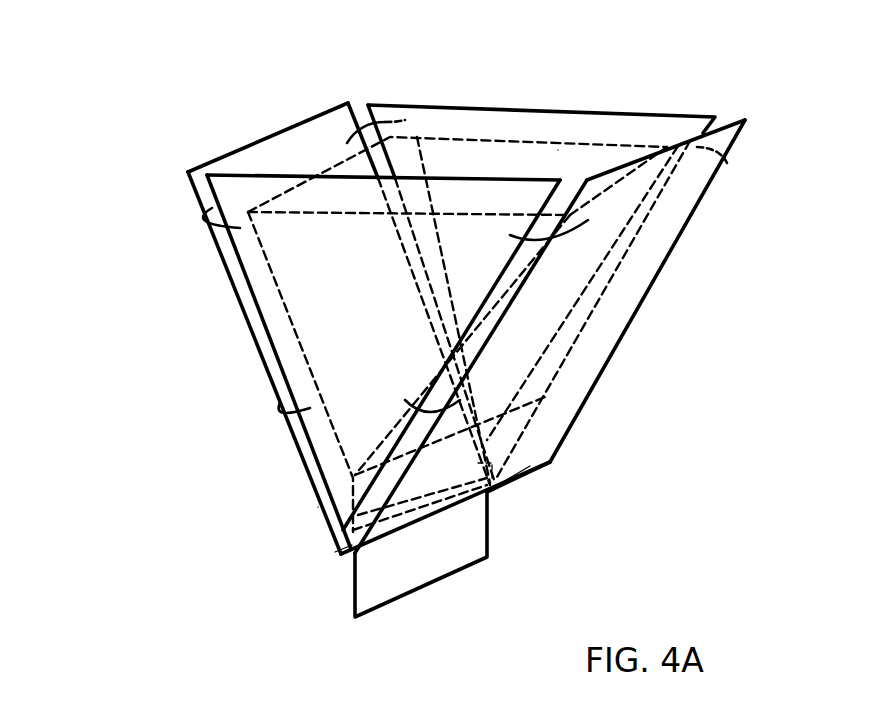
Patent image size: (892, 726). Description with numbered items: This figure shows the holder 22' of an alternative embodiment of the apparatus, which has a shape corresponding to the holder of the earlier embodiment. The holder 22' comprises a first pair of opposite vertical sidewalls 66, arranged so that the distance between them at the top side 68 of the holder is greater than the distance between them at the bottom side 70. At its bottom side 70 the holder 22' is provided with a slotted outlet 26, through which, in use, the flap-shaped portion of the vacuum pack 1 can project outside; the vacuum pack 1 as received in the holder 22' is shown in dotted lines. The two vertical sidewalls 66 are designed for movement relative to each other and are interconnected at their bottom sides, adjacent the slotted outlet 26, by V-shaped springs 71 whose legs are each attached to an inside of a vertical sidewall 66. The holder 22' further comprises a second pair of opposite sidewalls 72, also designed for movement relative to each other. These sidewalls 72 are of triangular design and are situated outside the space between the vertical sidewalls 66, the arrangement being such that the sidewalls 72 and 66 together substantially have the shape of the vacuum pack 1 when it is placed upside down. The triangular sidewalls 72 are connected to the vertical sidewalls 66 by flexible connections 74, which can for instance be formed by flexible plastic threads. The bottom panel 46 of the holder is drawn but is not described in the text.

The vacuum pack 1 is at (558, 150).
The holder 22' is at (391, 392).
The slotted outlet 26 is at (512, 488).
The bottom panel 46 is at (415, 577).
The vertical sidewalls 66 is at (205, 188).
The top side 68 is at (541, 115).
The bottom side 70 is at (318, 507).
The V-shaped springs 71 is at (338, 547).
The sidewalls 72 is at (530, 107).
The flexible connections 74 is at (367, 127).